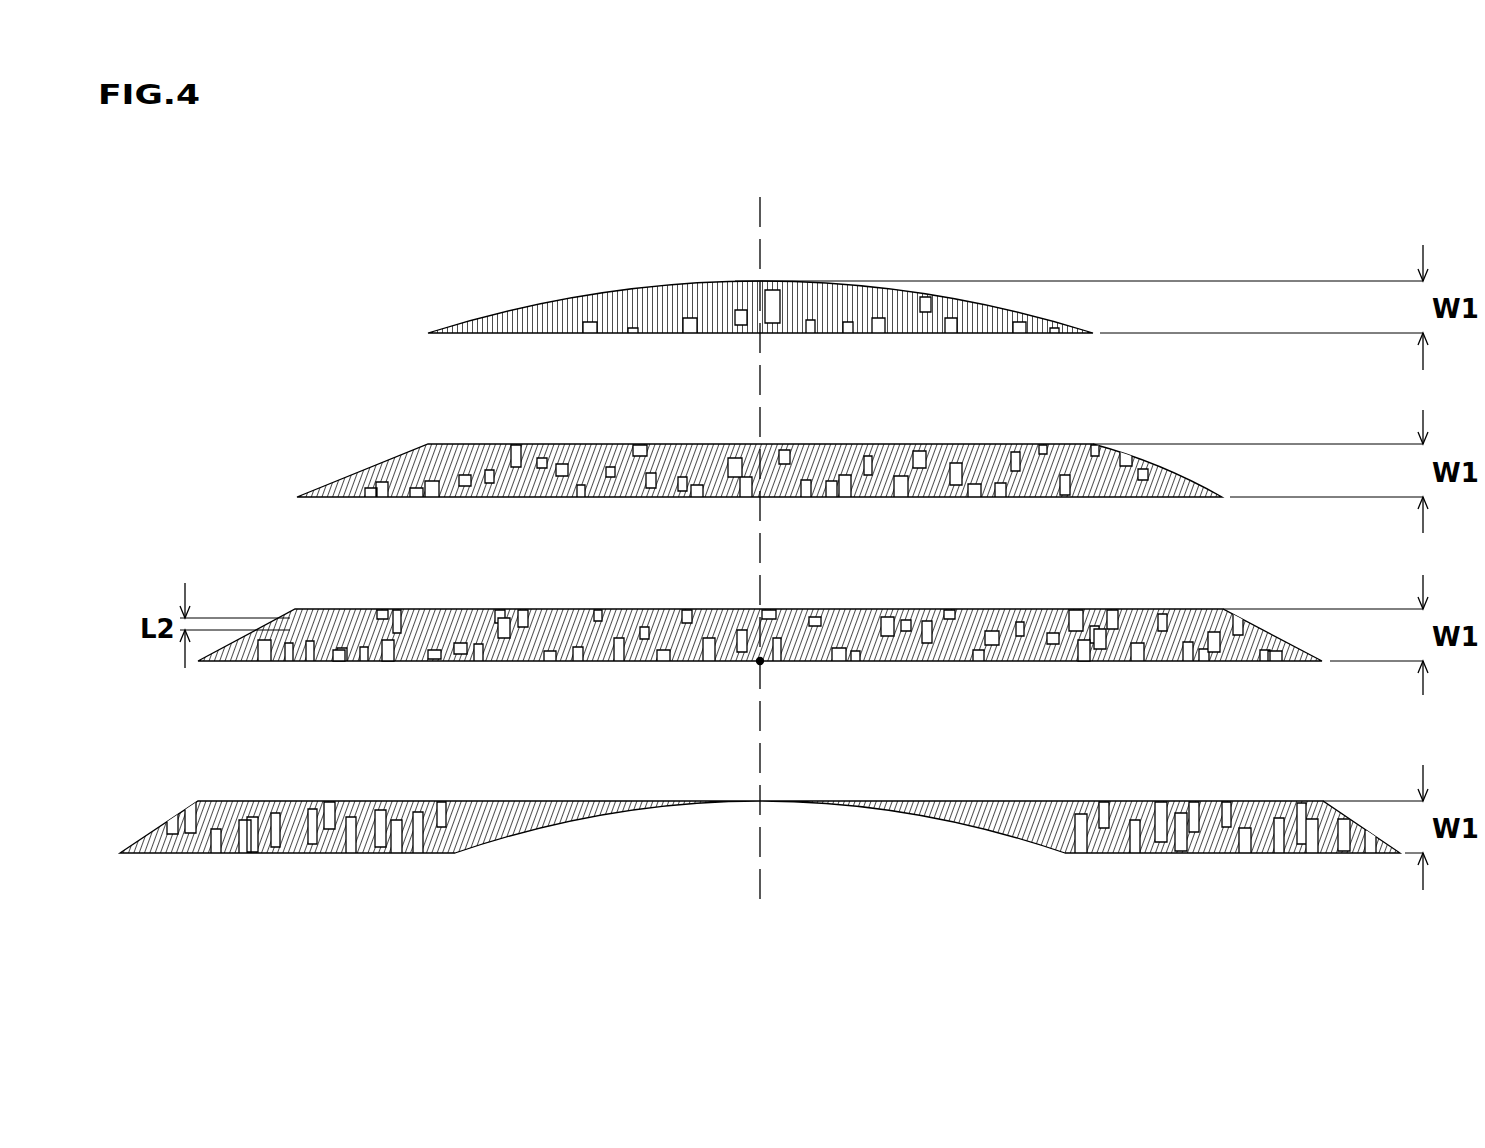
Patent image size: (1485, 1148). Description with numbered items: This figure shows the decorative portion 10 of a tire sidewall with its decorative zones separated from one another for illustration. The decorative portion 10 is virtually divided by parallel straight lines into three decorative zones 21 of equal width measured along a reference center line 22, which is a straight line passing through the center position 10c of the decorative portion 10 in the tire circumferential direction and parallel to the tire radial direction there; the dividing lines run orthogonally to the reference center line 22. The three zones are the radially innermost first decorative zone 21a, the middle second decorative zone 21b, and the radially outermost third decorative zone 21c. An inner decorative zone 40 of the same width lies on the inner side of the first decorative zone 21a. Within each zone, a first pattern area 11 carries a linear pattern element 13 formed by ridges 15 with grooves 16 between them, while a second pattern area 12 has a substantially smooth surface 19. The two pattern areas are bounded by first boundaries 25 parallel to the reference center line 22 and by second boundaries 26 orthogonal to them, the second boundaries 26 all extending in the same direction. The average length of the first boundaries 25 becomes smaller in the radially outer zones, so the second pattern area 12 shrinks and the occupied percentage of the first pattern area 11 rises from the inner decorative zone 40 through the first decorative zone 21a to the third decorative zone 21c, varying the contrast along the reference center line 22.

The decorative portion 10 is at (1047, 247).
The center position 10c is at (761, 661).
The first pattern area 11 is at (733, 213).
The second pattern area 12 is at (683, 337).
The linear pattern element 13 is at (1136, 720).
The ridge 15 is at (655, 305).
The groove 16 is at (700, 300).
The substantially smooth surface 19 is at (945, 336).
The decorative zone 21 is at (175, 272).
The first decorative zone 21a is at (308, 597).
The second decorative zone 21b is at (370, 457).
The third decorative zone 21c is at (462, 315).
The reference center line 22 is at (763, 540).
The first boundary 25 is at (583, 330).
The second boundary 26 is at (505, 630).
The inner decorative zone 40 is at (185, 797).